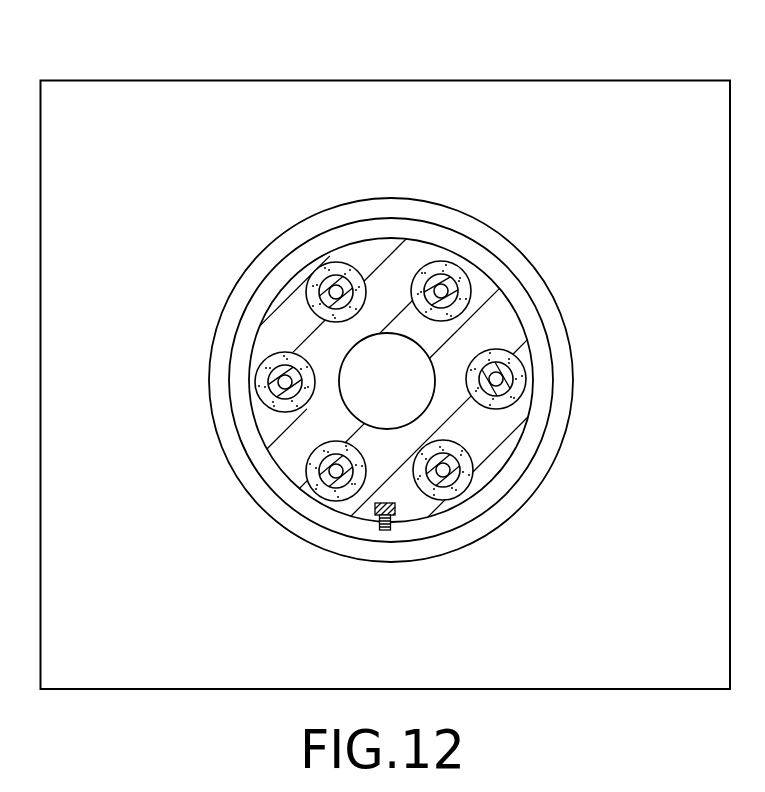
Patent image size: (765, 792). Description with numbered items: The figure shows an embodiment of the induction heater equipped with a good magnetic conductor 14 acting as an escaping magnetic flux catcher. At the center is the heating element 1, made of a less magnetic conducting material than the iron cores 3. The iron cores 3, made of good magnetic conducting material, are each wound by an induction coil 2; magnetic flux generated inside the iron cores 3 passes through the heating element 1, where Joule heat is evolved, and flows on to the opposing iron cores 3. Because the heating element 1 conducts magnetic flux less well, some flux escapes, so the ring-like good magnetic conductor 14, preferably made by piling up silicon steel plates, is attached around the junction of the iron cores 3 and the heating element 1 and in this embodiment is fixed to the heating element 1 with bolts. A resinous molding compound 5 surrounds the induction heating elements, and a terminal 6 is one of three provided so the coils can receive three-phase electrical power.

The heating element 1 is at (633, 80).
The induction coil 2 is at (448, 274).
The iron core 3 is at (462, 271).
The resinous molding compound 5 is at (488, 481).
The terminal 6 is at (378, 525).
The good magnetic conductor 14 is at (606, 354).